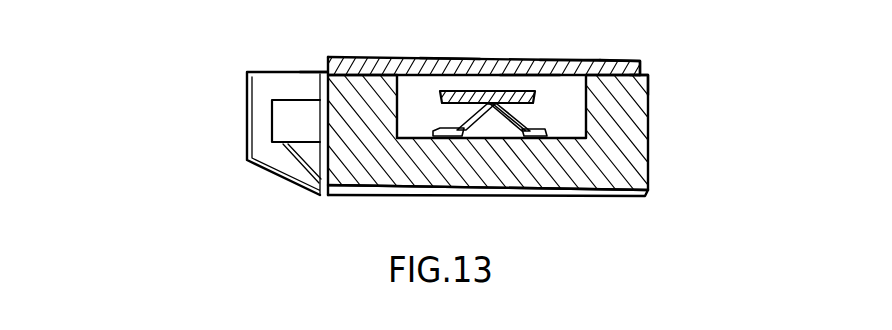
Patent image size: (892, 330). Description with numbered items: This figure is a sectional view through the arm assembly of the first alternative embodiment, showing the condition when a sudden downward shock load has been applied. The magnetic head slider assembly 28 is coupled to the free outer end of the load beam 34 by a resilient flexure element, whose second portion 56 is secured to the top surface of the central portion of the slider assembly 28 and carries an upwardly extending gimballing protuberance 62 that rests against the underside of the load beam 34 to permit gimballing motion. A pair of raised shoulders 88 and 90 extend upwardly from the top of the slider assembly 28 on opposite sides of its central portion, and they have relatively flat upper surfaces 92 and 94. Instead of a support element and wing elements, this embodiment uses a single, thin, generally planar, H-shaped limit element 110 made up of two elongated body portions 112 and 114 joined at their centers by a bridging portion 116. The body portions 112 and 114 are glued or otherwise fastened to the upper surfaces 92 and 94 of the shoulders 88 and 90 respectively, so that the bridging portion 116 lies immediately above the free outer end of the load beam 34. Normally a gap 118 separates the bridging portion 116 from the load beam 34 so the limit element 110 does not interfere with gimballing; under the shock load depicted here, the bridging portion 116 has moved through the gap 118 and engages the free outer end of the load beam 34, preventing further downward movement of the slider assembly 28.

The magnetic head slider assembly 28 is at (645, 188).
The load beam 34 is at (527, 76).
The second portion of the flexure element 56 is at (436, 133).
The gimballing protuberance 62 is at (506, 119).
The raised shoulder 88 is at (325, 110).
The raised shoulder 90 is at (648, 126).
The upper surface 92 is at (327, 70).
The upper surface 94 is at (648, 75).
The limit element 110 is at (567, 61).
The elongated body portion 112 is at (382, 57).
The elongated body portion 114 is at (612, 61).
The bridging portion 116 is at (447, 65).
The gap 118 is at (486, 88).